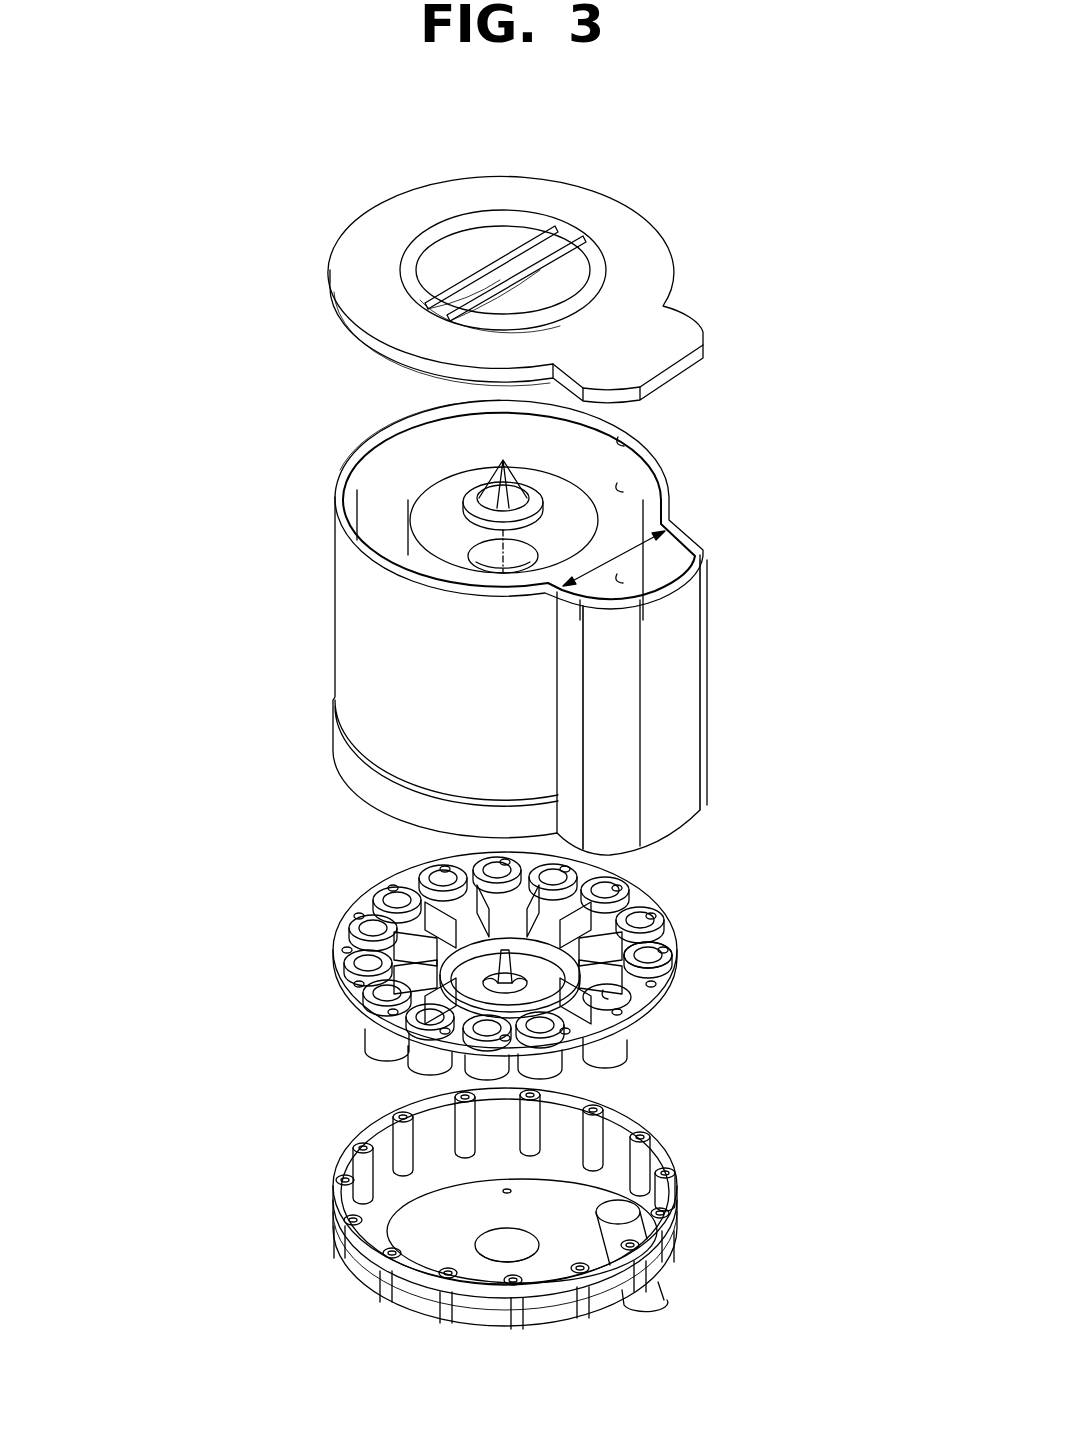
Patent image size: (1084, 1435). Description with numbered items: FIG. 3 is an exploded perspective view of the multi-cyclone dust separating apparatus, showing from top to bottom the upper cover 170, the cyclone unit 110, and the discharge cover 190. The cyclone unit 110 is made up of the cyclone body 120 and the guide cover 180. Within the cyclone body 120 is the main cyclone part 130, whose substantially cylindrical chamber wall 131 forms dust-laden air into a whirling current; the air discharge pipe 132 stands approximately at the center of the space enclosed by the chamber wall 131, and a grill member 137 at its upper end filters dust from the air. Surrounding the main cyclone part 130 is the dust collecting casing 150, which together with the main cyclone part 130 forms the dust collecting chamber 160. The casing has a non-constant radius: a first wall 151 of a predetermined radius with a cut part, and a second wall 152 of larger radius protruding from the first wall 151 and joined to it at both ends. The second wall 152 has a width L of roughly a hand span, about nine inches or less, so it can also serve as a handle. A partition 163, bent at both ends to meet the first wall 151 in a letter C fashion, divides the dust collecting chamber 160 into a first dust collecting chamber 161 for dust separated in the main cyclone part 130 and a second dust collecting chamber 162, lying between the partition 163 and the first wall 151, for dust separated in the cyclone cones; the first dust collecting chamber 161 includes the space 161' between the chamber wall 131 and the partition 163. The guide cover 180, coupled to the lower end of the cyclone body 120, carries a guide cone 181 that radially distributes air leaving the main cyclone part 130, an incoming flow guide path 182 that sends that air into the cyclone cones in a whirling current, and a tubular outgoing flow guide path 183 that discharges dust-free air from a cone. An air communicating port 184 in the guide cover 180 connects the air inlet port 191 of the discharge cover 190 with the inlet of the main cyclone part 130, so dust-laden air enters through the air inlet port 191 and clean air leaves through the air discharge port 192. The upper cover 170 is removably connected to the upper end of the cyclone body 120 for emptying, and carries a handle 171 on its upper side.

The cyclone unit 110 is at (247, 910).
The cyclone body 120 is at (540, 618).
The main cyclone part 130 is at (430, 477).
The chamber wall 131 is at (418, 512).
The air discharge pipe 132 is at (445, 535).
The grill member 137 is at (468, 492).
The dust collecting casing 150 is at (678, 704).
The first wall 151 is at (522, 708).
The second wall 152 is at (675, 747).
The dust collecting chamber 160 is at (734, 507).
The first dust collecting chamber 161 is at (734, 543).
The space 161' is at (699, 493).
The second dust collecting chamber 162 is at (623, 442).
The partition 163 is at (358, 478).
The upper cover 170 is at (485, 259).
The handle 171 is at (527, 248).
The guide cover 180 is at (494, 966).
The guide cone 181 is at (590, 972).
The incoming flow guide path 182 is at (600, 930).
The outgoing flow guide path 183 is at (645, 960).
The air communicating port 184 is at (615, 997).
The discharge cover 190 is at (488, 1216).
The air inlet port 191 is at (653, 1292).
The air discharge port 192 is at (520, 1245).